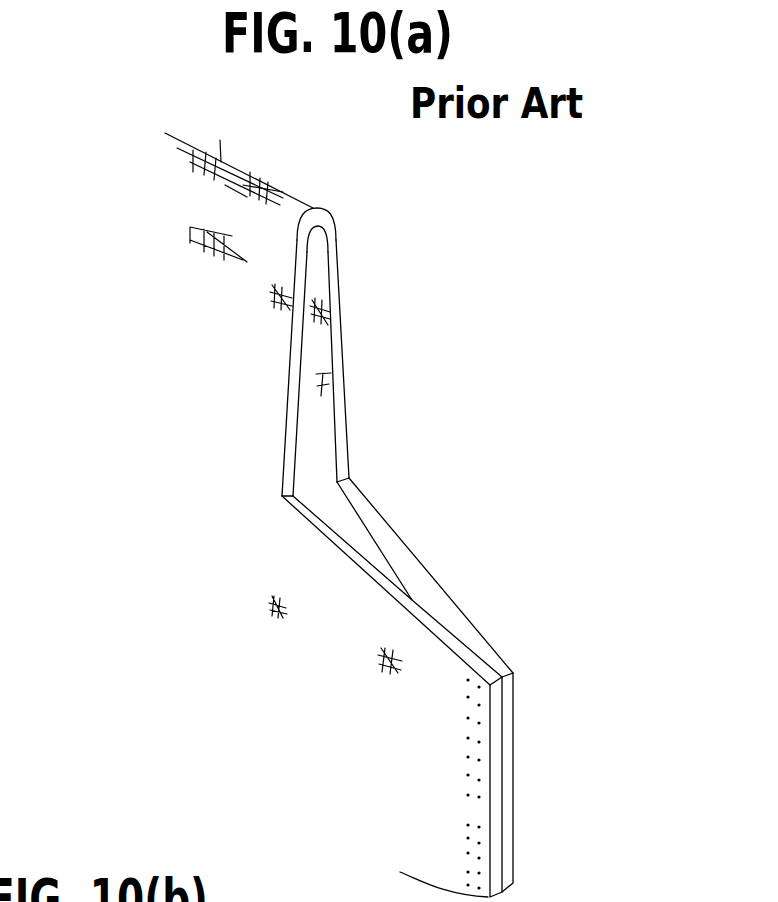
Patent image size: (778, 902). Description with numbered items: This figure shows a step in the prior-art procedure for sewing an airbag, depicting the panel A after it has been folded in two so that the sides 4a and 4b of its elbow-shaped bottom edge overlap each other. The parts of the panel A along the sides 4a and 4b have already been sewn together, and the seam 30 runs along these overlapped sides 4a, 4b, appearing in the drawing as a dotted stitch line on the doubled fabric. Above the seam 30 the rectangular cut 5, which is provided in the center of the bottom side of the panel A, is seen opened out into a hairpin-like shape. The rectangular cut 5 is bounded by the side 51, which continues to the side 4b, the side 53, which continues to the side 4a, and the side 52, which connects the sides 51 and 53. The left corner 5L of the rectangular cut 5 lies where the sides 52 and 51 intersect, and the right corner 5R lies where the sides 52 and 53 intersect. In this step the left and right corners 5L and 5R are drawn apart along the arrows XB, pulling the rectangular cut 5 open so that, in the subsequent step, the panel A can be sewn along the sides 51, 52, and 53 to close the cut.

The rectangular cut 5 is at (339, 394).
The side 52 is at (290, 357).
The left corner 5L is at (285, 499).
The right corner 5R is at (351, 481).
The side 51 is at (357, 560).
The side 53 is at (402, 557).
The seam 30 is at (478, 785).
The side 4a is at (510, 787).
The side 4b is at (495, 802).
The panel A is at (177, 360).
The arrows XB is at (382, 460).